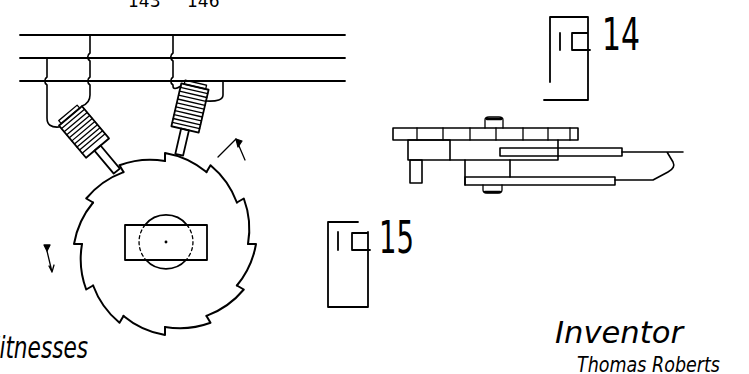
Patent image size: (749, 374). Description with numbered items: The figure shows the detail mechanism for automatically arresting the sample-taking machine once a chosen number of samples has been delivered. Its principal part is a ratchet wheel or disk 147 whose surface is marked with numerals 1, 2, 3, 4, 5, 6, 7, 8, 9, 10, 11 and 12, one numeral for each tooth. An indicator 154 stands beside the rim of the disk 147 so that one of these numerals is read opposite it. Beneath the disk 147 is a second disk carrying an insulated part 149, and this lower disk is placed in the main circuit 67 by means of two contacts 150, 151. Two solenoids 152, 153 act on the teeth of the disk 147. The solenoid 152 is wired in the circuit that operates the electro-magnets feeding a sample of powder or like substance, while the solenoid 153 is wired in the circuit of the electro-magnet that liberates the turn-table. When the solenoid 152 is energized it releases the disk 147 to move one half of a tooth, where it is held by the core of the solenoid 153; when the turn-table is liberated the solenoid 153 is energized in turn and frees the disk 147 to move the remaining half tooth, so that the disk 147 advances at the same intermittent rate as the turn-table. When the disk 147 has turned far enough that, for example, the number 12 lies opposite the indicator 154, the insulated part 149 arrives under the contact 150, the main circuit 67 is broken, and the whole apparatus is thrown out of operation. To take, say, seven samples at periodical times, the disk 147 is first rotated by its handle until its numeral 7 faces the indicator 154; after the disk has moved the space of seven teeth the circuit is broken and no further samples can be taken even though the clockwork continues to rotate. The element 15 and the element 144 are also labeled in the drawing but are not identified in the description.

In FIG. 15, the shaft 15 is at (200, 253).
In FIG. 14, the main circuit conductor 67 is at (661, 166).
In FIG. 14, the rack bar 144 is at (430, 135).
In FIG. 15, the ratchet wheel or disk 147 is at (165, 263).
In FIG. 14, the insulated part 149 is at (420, 152).
In FIG. 14, the contact 150 is at (540, 153).
In FIG. 14, the contact 151 is at (573, 181).
In FIG. 15, the solenoid 152 is at (73, 131).
In FIG. 15, the solenoid 153 is at (205, 117).
In FIG. 15, the indicator 154 is at (249, 158).
In FIG. 15, the disk numeral 1 is at (184, 165).
In FIG. 15, the disk numeral 2 is at (143, 173).
In FIG. 15, the disk numeral 3 is at (104, 192).
In FIG. 15, the disk numeral 4 is at (84, 226).
In FIG. 15, the disk numeral 5 is at (92, 267).
In FIG. 15, the disk numeral 6 is at (111, 304).
In FIG. 15, the disk numeral 7 is at (145, 324).
In FIG. 15, the disk numeral 8 is at (188, 316).
In FIG. 15, the disk numeral 9 is at (225, 296).
In FIG. 15, the disk numeral 10 is at (244, 262).
In FIG. 15, the disk numeral 11 is at (236, 222).
In FIG. 15, the disk numeral 12 is at (216, 183).